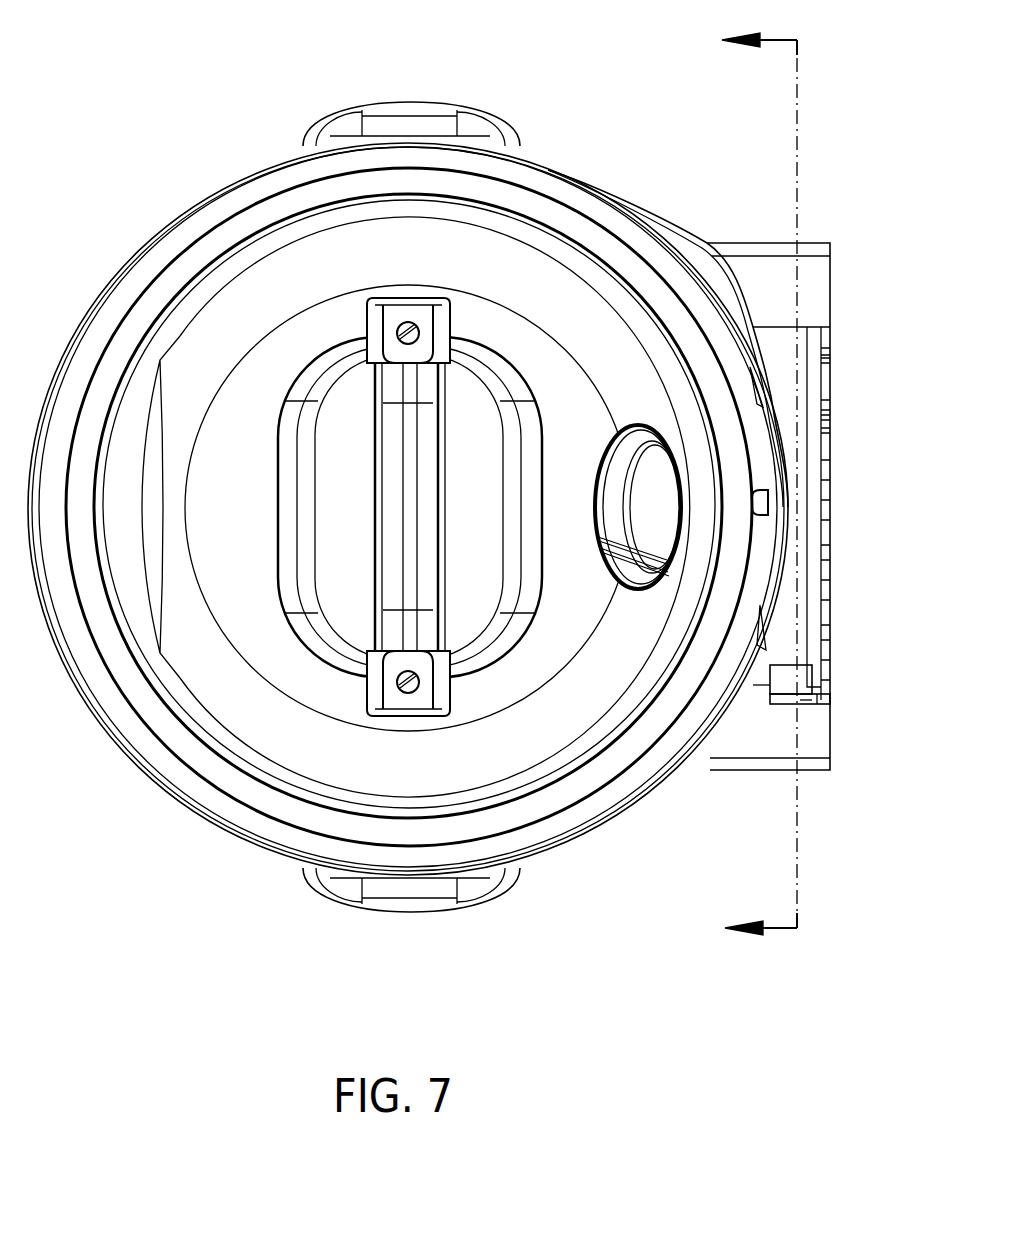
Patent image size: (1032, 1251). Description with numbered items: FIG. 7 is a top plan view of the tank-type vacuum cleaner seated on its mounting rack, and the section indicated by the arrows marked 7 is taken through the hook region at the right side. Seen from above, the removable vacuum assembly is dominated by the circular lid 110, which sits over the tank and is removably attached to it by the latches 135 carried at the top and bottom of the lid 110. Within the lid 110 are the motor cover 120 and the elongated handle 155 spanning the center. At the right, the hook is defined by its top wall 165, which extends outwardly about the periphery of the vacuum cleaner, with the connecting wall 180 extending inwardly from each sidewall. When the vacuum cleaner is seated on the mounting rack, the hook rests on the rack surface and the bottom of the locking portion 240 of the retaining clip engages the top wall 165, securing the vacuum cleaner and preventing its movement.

The section line 7- 7 is at (764, 488).
The lid 110 is at (190, 200).
The motor cover 120 is at (262, 633).
The latches 135 is at (447, 100).
The handle 155 is at (434, 402).
The top wall 165 is at (780, 337).
The connecting wall 180 is at (803, 706).
The locking portion 240 is at (777, 685).